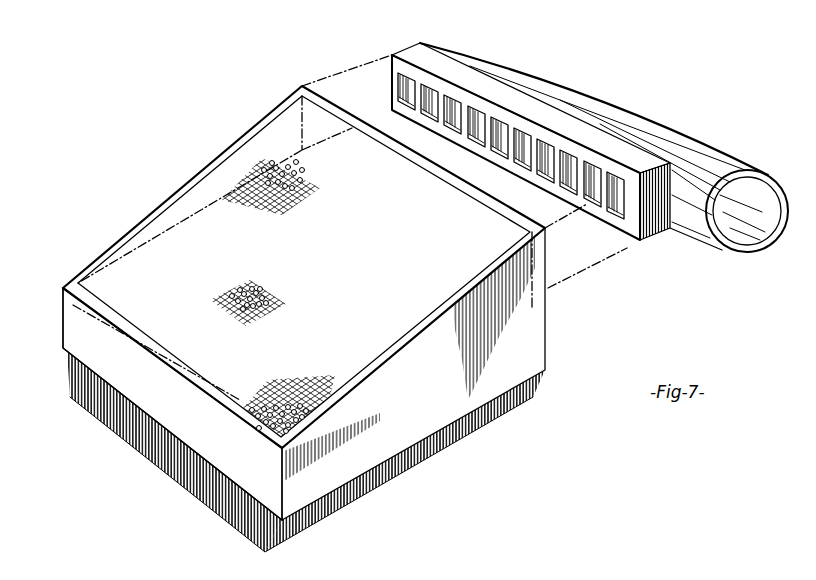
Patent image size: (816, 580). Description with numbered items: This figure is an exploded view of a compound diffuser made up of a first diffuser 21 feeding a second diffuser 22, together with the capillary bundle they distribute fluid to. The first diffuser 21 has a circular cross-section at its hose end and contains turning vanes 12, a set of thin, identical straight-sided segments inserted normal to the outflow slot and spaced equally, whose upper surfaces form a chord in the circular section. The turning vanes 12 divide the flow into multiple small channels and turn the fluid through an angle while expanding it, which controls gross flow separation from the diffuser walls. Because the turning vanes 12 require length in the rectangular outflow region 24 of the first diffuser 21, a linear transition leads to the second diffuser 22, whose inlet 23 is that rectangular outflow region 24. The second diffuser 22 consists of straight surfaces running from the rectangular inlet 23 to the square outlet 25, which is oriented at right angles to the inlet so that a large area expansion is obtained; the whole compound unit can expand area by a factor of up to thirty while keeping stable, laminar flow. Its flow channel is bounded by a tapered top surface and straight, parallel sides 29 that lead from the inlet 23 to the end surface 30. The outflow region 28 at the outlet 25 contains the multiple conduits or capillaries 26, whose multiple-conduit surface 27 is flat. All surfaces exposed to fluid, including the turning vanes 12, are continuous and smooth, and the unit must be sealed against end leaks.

The turning vanes 12 is at (556, 165).
The first diffuser 21 is at (683, 140).
The second diffuser 22 is at (533, 347).
The inlet 23 is at (520, 272).
The rectangular outflow region 24 is at (627, 228).
The outlet 25 is at (330, 286).
The capillaries 26 is at (233, 504).
The multiple-conduit surface 27 is at (255, 288).
The outflow region 28 is at (352, 498).
The parallel sides 29 is at (249, 177).
The end surface 30 is at (185, 412).